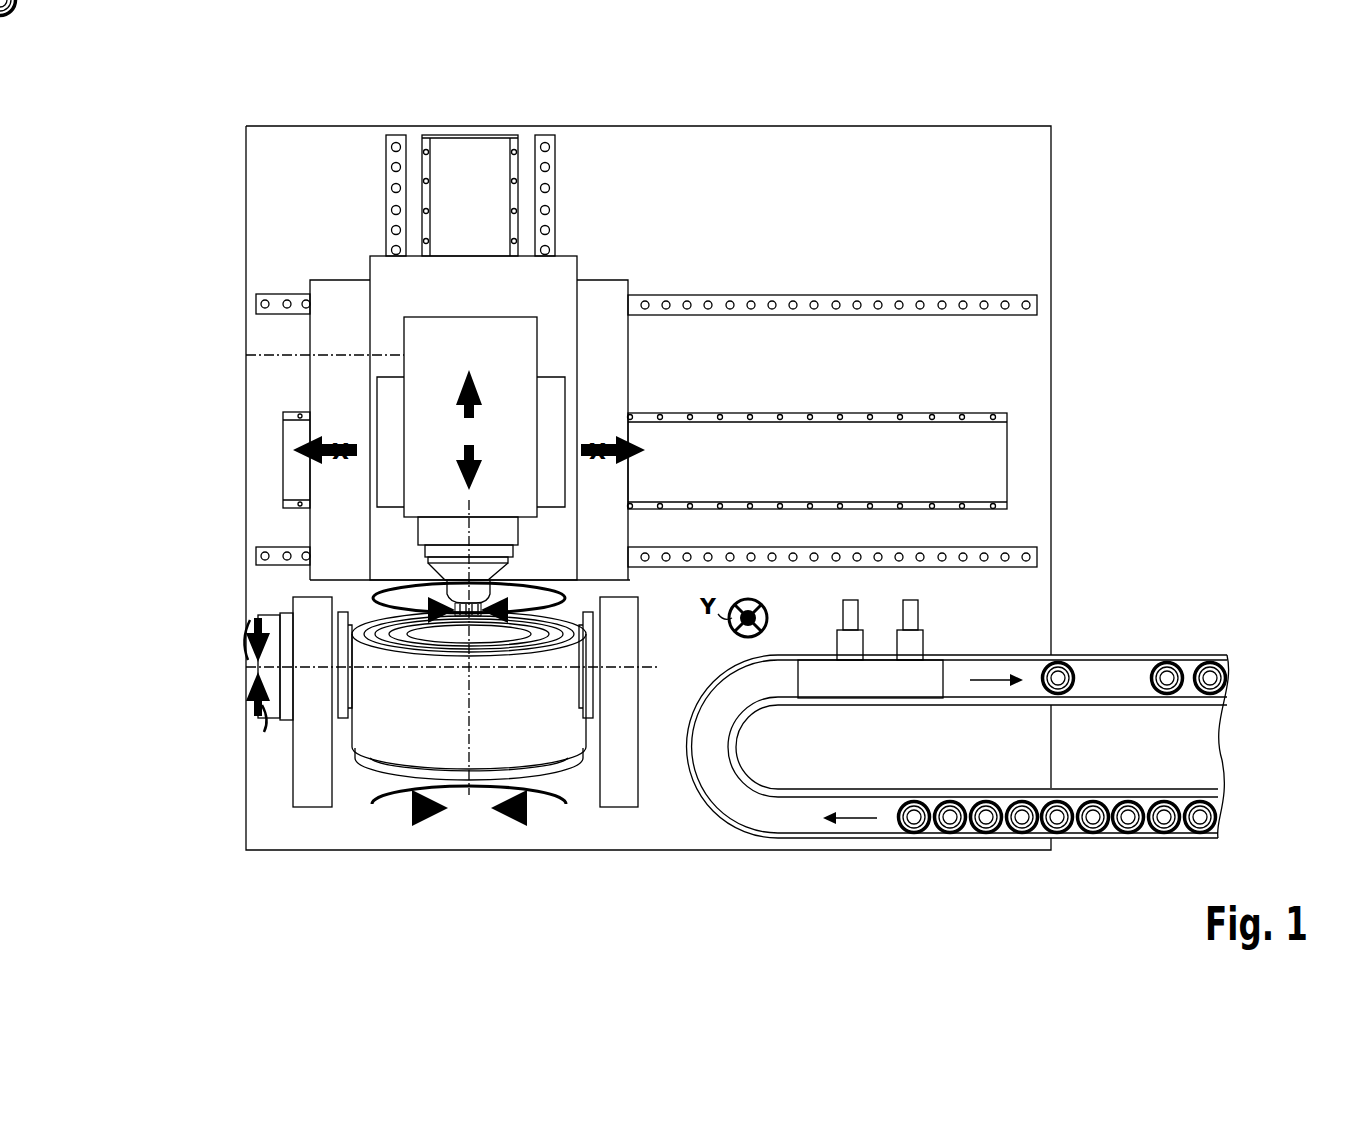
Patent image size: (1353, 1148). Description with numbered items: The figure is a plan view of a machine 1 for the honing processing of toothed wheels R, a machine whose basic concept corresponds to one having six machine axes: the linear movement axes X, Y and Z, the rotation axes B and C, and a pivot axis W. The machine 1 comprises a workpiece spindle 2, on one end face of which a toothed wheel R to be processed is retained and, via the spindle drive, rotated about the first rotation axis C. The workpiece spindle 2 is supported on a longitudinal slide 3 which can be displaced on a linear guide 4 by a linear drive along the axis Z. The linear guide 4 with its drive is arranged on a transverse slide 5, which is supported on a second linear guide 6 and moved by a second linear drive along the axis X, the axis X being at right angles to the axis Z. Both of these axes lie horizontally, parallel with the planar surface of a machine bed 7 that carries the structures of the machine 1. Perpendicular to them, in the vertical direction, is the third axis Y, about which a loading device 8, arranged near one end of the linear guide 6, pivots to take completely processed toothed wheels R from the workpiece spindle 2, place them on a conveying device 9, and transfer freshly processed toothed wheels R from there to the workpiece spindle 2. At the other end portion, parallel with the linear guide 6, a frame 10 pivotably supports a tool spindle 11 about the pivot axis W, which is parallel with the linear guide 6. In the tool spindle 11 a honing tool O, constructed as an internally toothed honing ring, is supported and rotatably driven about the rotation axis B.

The machine 1 is at (1140, 358).
The workpiece spindle 2 is at (438, 346).
The longitudinal slide 3 is at (380, 272).
The linear guide 4 is at (386, 175).
The transverse slide 5 is at (603, 296).
The second linear guide 6 is at (826, 295).
The machine bed 7 is at (1052, 168).
The loading device 8 is at (918, 685).
The conveying device 9 is at (1000, 826).
The frame 10 is at (308, 778).
The tool spindle 11 is at (537, 715).
The toothed wheel R is at (350, 637).
The honing tool O is at (409, 628).